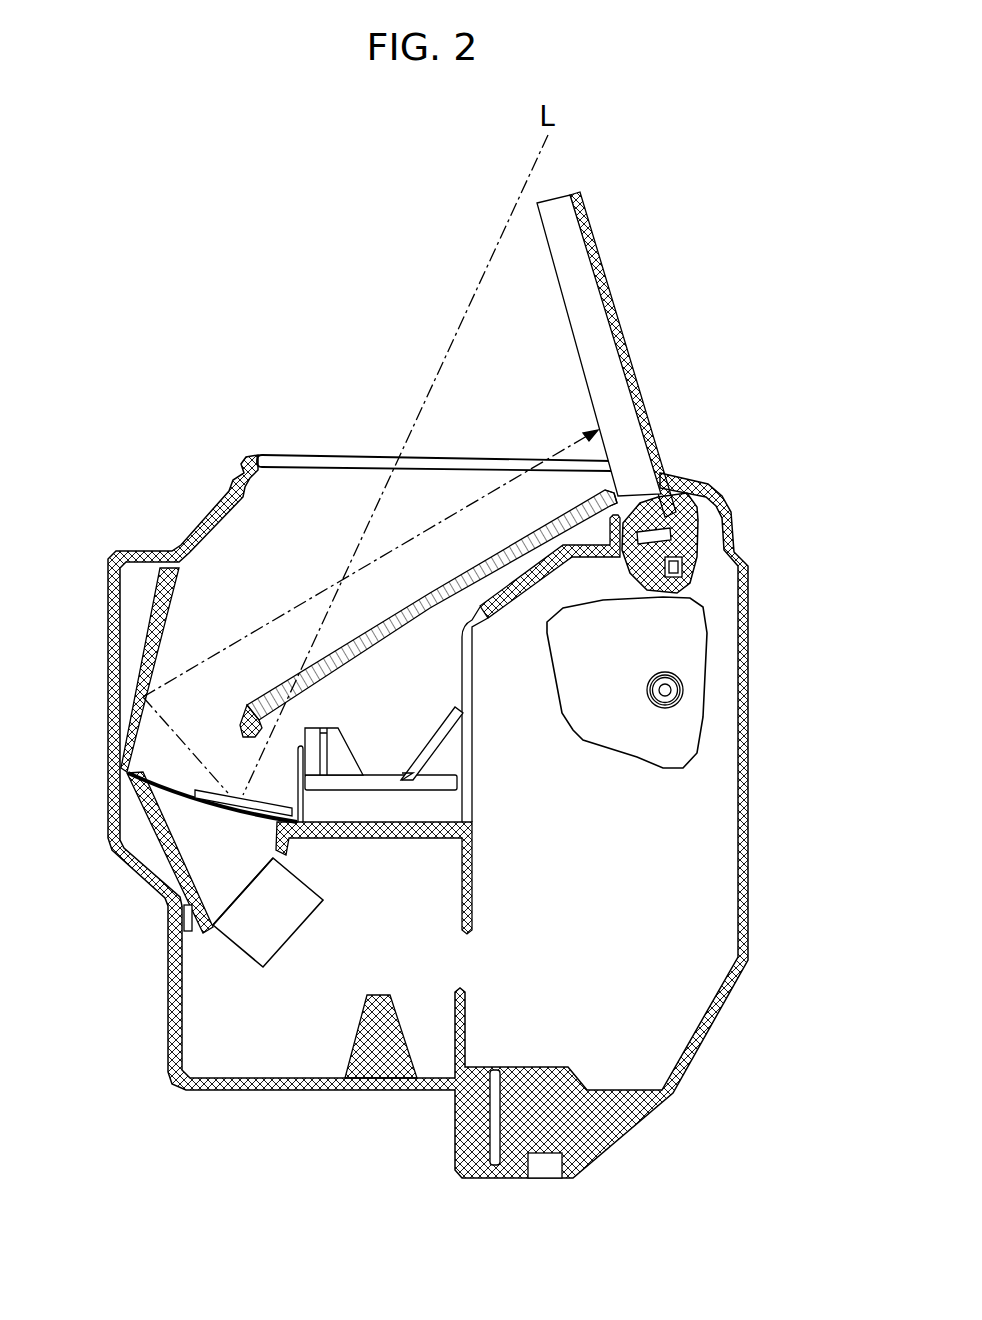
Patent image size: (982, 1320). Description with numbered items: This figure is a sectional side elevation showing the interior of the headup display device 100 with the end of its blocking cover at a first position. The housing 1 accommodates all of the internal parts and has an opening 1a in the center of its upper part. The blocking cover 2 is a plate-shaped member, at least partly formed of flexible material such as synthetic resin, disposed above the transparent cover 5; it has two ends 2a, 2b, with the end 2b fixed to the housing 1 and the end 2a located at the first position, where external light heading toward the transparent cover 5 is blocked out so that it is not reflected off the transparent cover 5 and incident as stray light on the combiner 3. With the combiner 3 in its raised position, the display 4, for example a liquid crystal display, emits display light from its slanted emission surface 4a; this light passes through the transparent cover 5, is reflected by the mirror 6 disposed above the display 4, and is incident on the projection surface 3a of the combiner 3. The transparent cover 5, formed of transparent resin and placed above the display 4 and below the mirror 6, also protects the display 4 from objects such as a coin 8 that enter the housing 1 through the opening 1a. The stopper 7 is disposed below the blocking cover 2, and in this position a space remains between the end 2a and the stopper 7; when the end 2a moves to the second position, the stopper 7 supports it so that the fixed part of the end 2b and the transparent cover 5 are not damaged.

The headup display device 100 is at (321, 311).
The housing 1 is at (752, 874).
The opening 1a is at (325, 461).
The blocking cover 2 is at (416, 654).
The end of blocking cover 2a is at (277, 692).
The end of blocking cover 2b is at (565, 442).
The combiner 3 is at (591, 354).
The projection surface 3a is at (600, 293).
The display 4 is at (283, 902).
The emission surface 4a is at (247, 887).
The transparent cover 5 is at (177, 797).
The mirror 6 is at (140, 650).
The stopper 7 is at (312, 728).
The coin 8 is at (266, 797).